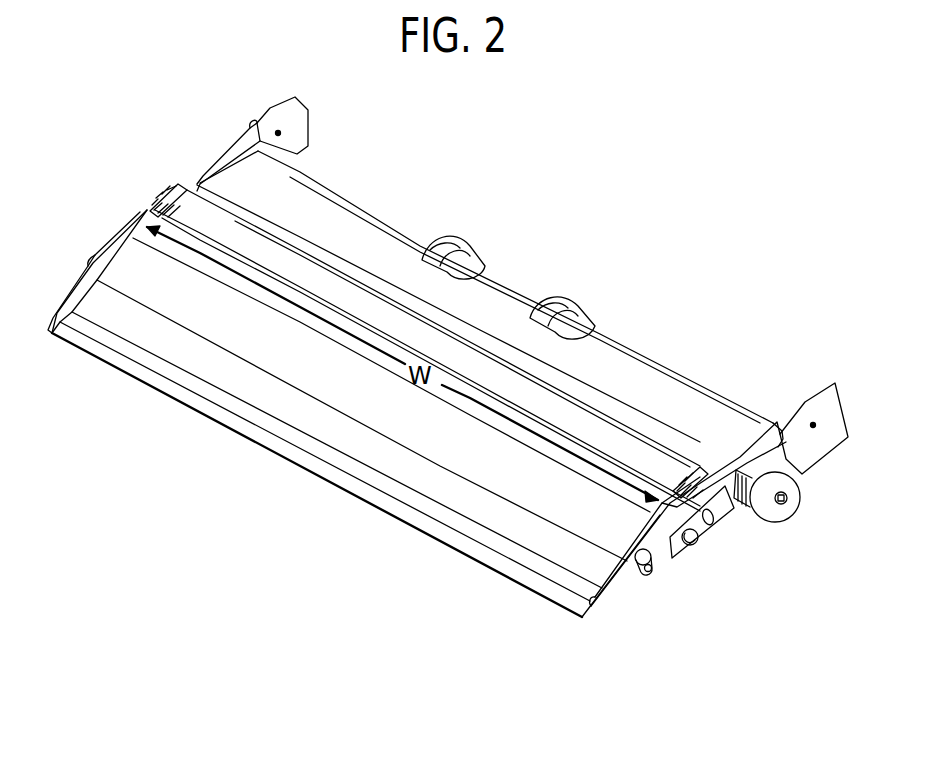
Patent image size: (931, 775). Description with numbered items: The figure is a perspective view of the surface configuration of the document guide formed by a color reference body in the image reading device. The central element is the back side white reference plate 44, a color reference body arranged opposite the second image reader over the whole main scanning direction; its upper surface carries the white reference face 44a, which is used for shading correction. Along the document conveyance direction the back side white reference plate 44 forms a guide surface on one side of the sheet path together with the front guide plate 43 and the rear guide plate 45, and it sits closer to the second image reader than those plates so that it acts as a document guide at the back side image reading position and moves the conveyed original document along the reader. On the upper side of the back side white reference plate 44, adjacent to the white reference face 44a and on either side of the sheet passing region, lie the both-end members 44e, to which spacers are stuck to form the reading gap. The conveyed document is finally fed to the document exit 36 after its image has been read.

The document exit 36 is at (478, 256).
The front guide plate 43 is at (683, 388).
The back side white reference plate 44 is at (605, 397).
The white reference face 44a is at (192, 215).
The both-end member 44e is at (157, 200).
The rear guide plate 45 is at (567, 562).